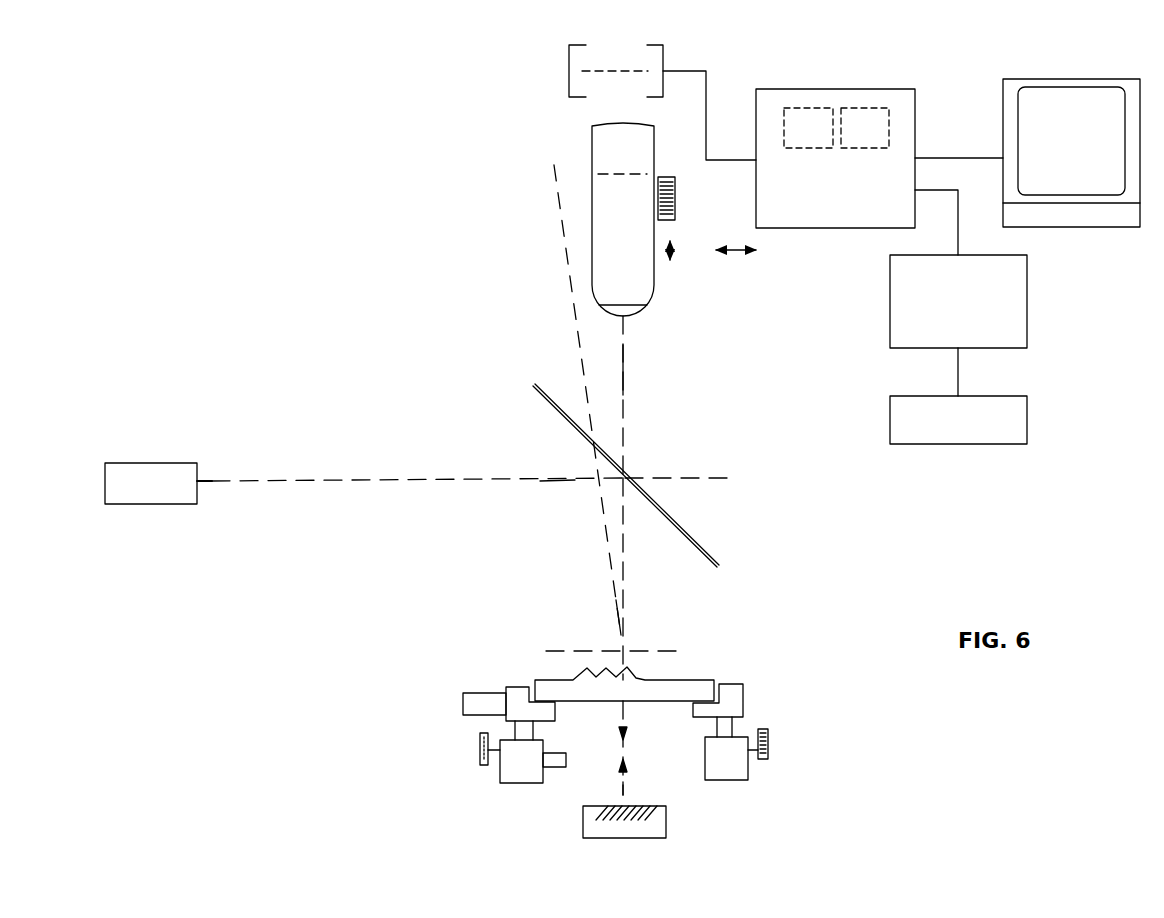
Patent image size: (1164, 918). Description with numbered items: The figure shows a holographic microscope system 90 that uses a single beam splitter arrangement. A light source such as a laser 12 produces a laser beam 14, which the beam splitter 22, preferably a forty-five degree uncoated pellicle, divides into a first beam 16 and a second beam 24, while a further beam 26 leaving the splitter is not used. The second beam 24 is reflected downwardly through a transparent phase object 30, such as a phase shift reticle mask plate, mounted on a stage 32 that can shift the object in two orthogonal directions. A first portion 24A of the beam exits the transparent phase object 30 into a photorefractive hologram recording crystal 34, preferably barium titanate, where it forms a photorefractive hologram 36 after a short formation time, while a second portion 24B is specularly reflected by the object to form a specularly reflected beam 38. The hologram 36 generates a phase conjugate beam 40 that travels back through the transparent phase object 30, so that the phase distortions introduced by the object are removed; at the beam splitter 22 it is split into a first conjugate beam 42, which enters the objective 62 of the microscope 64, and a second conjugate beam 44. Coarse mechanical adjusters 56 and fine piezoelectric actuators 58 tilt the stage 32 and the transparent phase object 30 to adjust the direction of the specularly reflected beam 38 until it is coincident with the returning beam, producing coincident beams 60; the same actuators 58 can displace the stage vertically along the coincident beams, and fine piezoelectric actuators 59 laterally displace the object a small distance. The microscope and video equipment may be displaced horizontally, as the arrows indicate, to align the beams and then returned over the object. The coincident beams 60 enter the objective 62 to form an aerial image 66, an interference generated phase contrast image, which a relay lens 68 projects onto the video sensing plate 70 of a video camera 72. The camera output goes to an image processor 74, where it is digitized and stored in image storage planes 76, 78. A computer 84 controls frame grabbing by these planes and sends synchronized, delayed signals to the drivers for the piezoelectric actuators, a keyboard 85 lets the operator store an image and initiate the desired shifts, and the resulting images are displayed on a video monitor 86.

The laser 12 is at (128, 505).
The laser beam 14 is at (212, 480).
The first beam 16 is at (295, 481).
The beam splitter 22 is at (663, 508).
The second beam 24 is at (627, 583).
The first portion of beam 24 24A is at (627, 707).
The second portion of beam 24 24B is at (613, 608).
The beam 26 is at (700, 474).
The transparent phase object 30 is at (695, 677).
The stage 32 is at (729, 688).
The photorefractive hologram recording crystal 34 is at (583, 827).
The photorefractive hologram 36 is at (652, 813).
The specularly reflected beam 38 is at (610, 563).
The phase conjugate beam 40 is at (628, 787).
The first conjugate beam 42 is at (627, 422).
The second conjugate beam 44 is at (558, 481).
The coarse mechanical adjusters 56 is at (770, 748).
The fine piezoelectric actuators 58 is at (734, 727).
The fine piezoelectric actuators 59 is at (463, 698).
The coincident beams 60 is at (627, 372).
The objective 62 is at (628, 316).
The microscope 64 is at (655, 161).
The aerial image 66 is at (621, 179).
The relay lens 68 is at (622, 125).
The video sensing plate 70 is at (602, 66).
The video camera 72 is at (670, 61).
The image processor 74 is at (838, 88).
The image storage plane 76 is at (808, 128).
The image storage plane 78 is at (865, 128).
The computer 84 is at (889, 312).
The keyboard 85 is at (1028, 422).
The video monitor 86 is at (1041, 78).
The holographic microscope system 90 is at (352, 142).